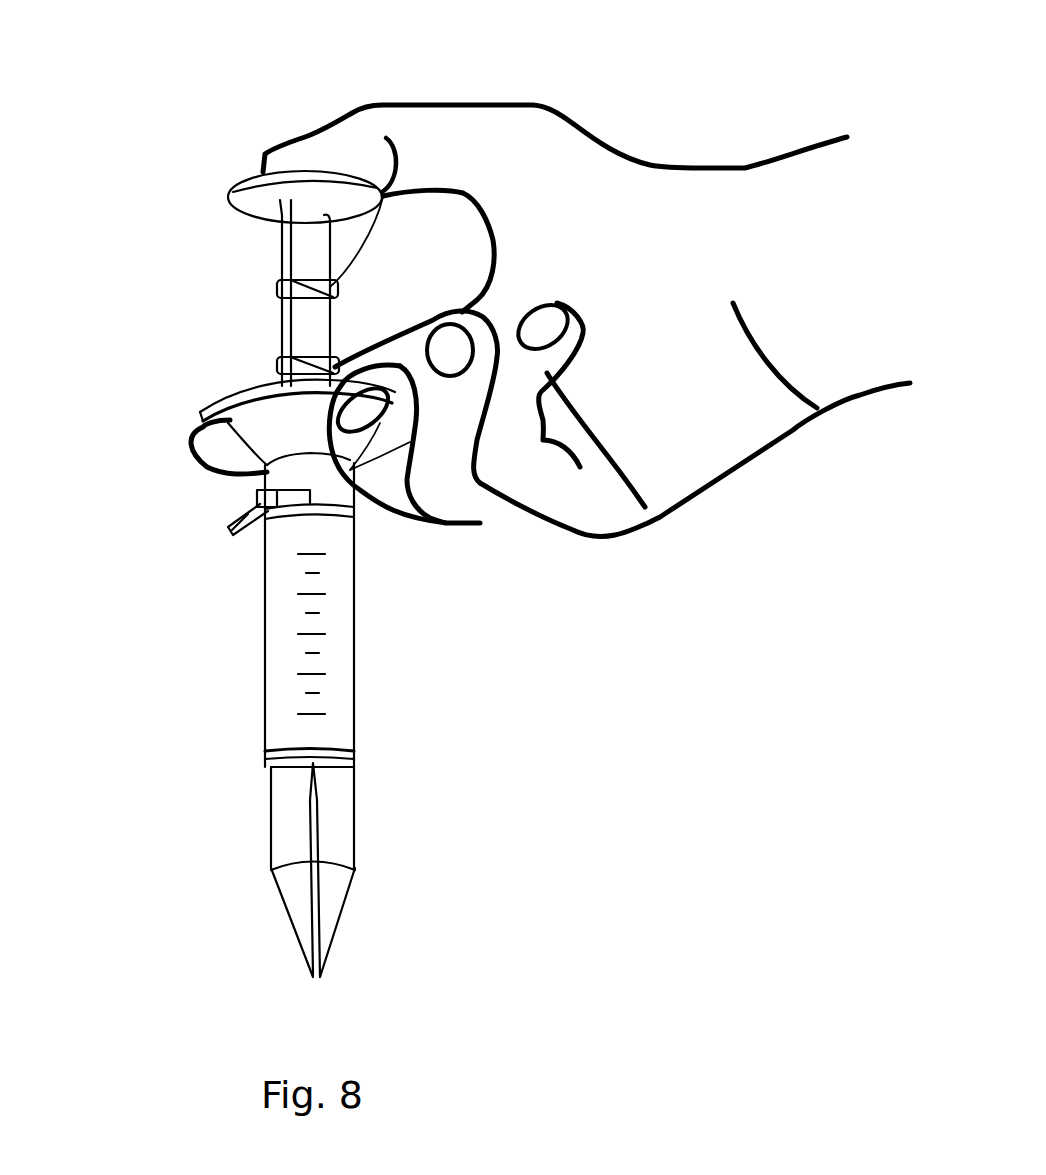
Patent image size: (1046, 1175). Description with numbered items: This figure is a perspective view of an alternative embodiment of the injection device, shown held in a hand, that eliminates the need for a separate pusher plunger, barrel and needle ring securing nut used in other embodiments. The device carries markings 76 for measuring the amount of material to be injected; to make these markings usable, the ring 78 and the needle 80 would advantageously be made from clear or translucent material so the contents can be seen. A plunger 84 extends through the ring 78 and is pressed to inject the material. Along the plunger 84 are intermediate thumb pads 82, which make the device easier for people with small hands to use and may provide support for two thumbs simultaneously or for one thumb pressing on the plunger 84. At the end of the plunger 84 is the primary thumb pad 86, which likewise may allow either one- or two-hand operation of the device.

The markings 76 is at (290, 673).
The ring 78 is at (353, 745).
The needle 80 is at (293, 812).
The intermediate thumb pads 82 is at (332, 368).
The plunger 84 is at (273, 367).
The primary thumb pad 86 is at (337, 182).